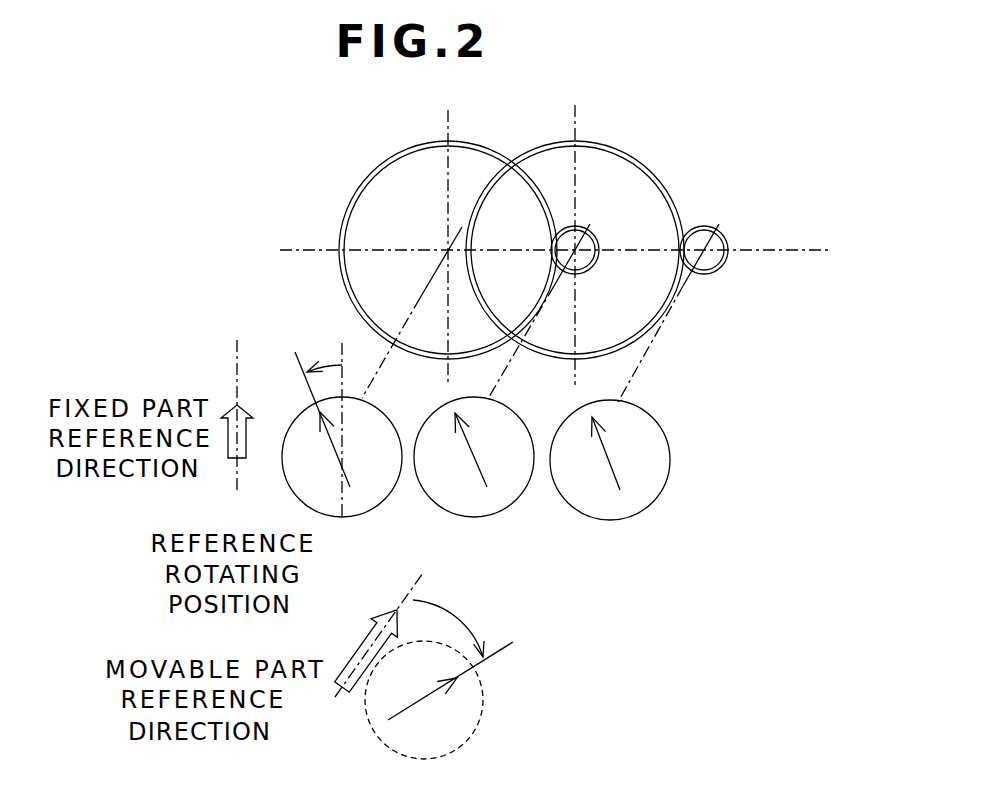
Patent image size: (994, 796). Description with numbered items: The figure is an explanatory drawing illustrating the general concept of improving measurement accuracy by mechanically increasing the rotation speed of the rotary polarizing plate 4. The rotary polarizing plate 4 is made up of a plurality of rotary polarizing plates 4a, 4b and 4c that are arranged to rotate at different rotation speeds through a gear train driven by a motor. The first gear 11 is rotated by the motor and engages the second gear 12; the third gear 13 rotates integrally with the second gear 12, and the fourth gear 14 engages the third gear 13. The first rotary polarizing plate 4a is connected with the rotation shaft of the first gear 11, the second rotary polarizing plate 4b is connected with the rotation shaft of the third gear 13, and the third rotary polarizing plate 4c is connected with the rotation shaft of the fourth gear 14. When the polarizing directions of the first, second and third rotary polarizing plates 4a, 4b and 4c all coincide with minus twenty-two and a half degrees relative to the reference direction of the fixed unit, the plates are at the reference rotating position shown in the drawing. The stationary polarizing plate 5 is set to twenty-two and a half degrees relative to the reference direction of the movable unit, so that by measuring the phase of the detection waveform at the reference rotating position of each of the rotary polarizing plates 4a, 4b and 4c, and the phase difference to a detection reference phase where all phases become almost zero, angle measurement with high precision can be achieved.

The first gear 11 is at (358, 183).
The third gear 13 is at (610, 142).
The second gear 12 is at (592, 237).
The fourth gear 14 is at (708, 227).
The rotary polarizing plate 4 is at (499, 458).
The first rotary polarizing plate 4a is at (348, 517).
The second rotary polarizing plate 4b is at (475, 517).
The third rotary polarizing plate 4c is at (635, 515).
The stationary polarizing plate 5 is at (483, 702).